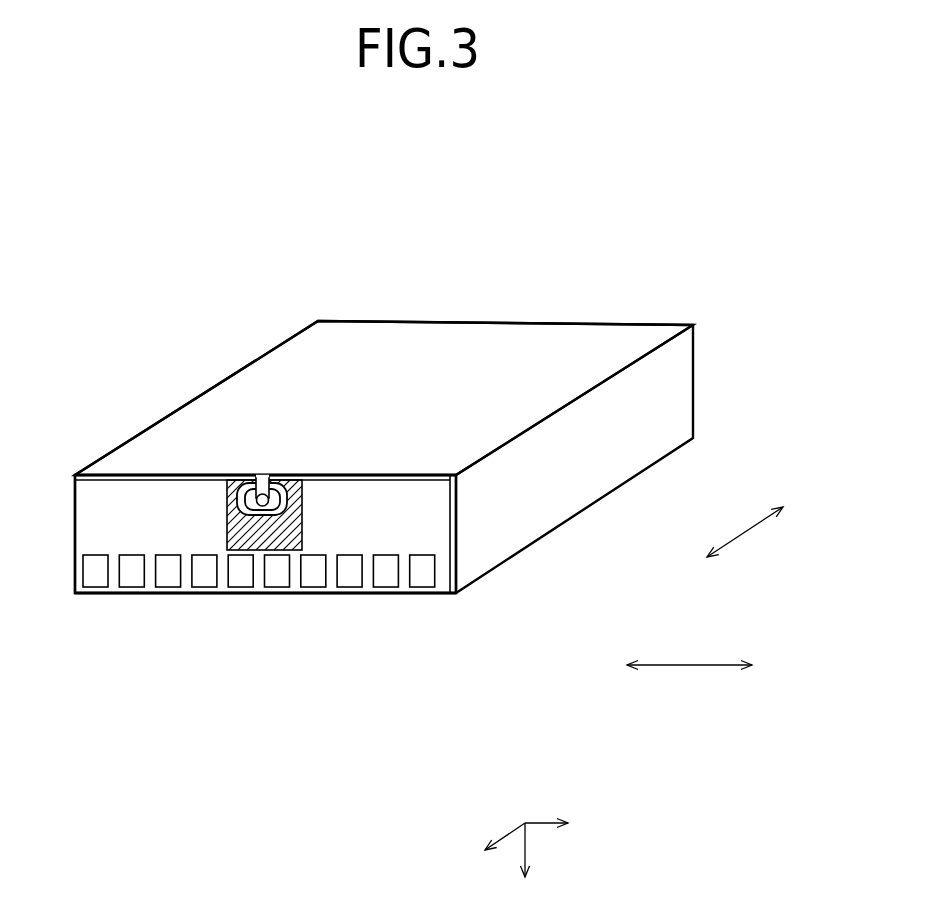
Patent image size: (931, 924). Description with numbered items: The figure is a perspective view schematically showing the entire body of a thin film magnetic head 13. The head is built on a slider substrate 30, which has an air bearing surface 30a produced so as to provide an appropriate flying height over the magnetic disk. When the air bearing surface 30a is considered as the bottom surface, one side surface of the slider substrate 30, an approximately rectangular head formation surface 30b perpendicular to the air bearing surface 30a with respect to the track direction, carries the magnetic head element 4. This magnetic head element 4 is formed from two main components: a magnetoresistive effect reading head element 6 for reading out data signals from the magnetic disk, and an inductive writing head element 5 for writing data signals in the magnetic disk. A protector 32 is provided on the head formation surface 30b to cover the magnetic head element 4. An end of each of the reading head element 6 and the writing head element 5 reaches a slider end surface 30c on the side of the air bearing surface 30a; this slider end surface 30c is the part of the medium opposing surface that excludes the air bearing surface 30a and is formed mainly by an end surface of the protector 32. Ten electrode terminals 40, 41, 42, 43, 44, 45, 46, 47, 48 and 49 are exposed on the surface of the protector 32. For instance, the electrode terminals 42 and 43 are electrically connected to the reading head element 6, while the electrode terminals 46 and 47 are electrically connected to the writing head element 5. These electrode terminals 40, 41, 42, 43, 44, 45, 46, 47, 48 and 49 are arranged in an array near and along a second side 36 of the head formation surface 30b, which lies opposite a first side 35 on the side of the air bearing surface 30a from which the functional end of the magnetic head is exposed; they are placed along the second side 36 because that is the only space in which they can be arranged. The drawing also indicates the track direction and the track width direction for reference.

The thin film magnetic head 13 is at (450, 300).
The slider substrate 30 is at (685, 388).
The air bearing surface 30a is at (287, 365).
The head formation surface 30b is at (105, 478).
The slider end surface 30c is at (185, 478).
The protector 32 is at (452, 553).
The first side 35 is at (235, 476).
The second side 36 is at (222, 592).
The magnetic head element 4 is at (399, 397).
The inductive writing head element 5 is at (285, 476).
The MR reading head element 6 is at (268, 476).
The electrode terminal 40 is at (98, 583).
The electrode terminal 41 is at (135, 583).
The electrode terminal 42 is at (171, 583).
The electrode terminal 43 is at (207, 583).
The electrode terminal 44 is at (244, 583).
The electrode terminal 45 is at (280, 583).
The electrode terminal 46 is at (316, 583).
The electrode terminal 47 is at (353, 583).
The electrode terminal 48 is at (389, 583).
The electrode terminal 49 is at (425, 583).